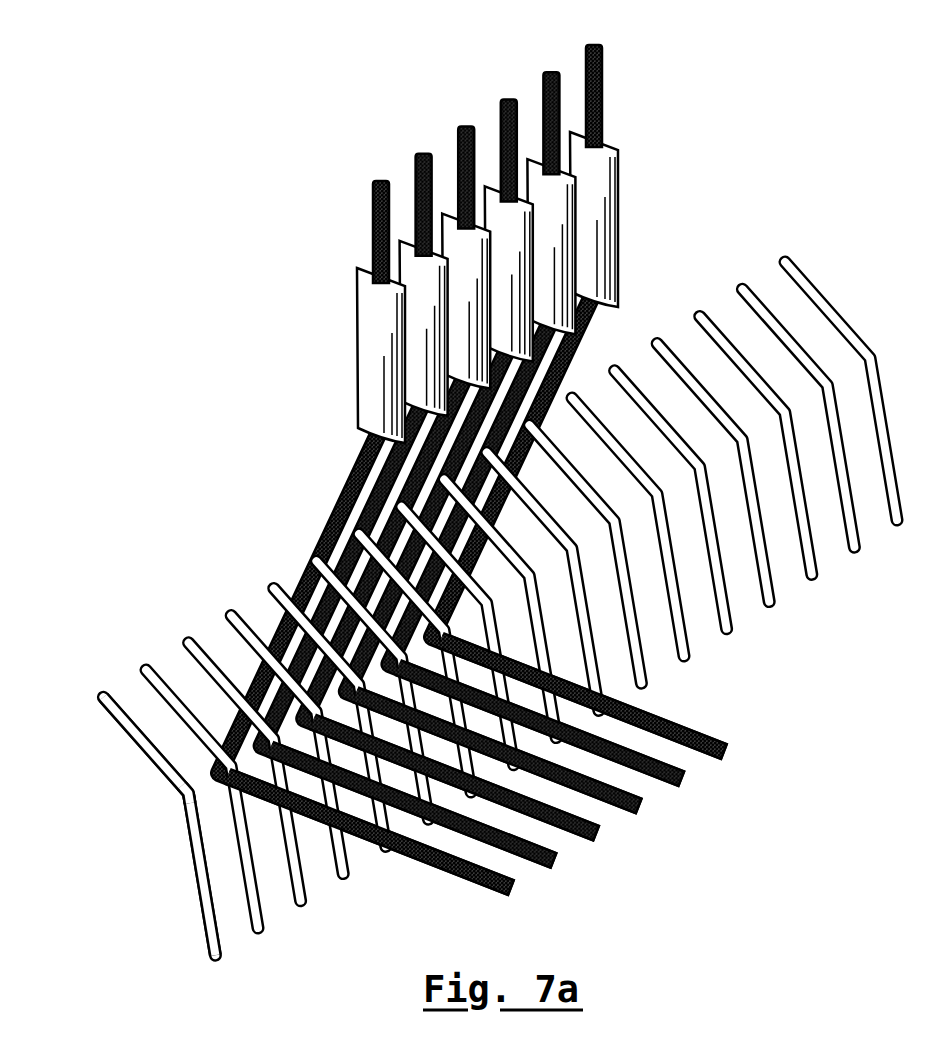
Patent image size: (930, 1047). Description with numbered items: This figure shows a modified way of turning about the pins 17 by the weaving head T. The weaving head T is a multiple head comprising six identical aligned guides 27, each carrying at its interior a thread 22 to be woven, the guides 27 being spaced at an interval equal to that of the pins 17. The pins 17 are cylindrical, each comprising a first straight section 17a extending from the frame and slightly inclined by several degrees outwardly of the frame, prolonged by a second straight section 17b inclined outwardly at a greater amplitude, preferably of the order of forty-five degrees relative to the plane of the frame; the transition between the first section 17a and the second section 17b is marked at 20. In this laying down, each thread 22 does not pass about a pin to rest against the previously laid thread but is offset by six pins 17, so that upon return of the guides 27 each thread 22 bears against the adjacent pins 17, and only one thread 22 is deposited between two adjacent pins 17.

The weaving head T is at (462, 500).
The guides 27 is at (423, 362).
The pins 17 is at (462, 609).
The first straight section 17a is at (205, 912).
The second straight section 17b is at (147, 760).
The bend of contact pin 20 is at (177, 800).
The thread 22 is at (480, 840).